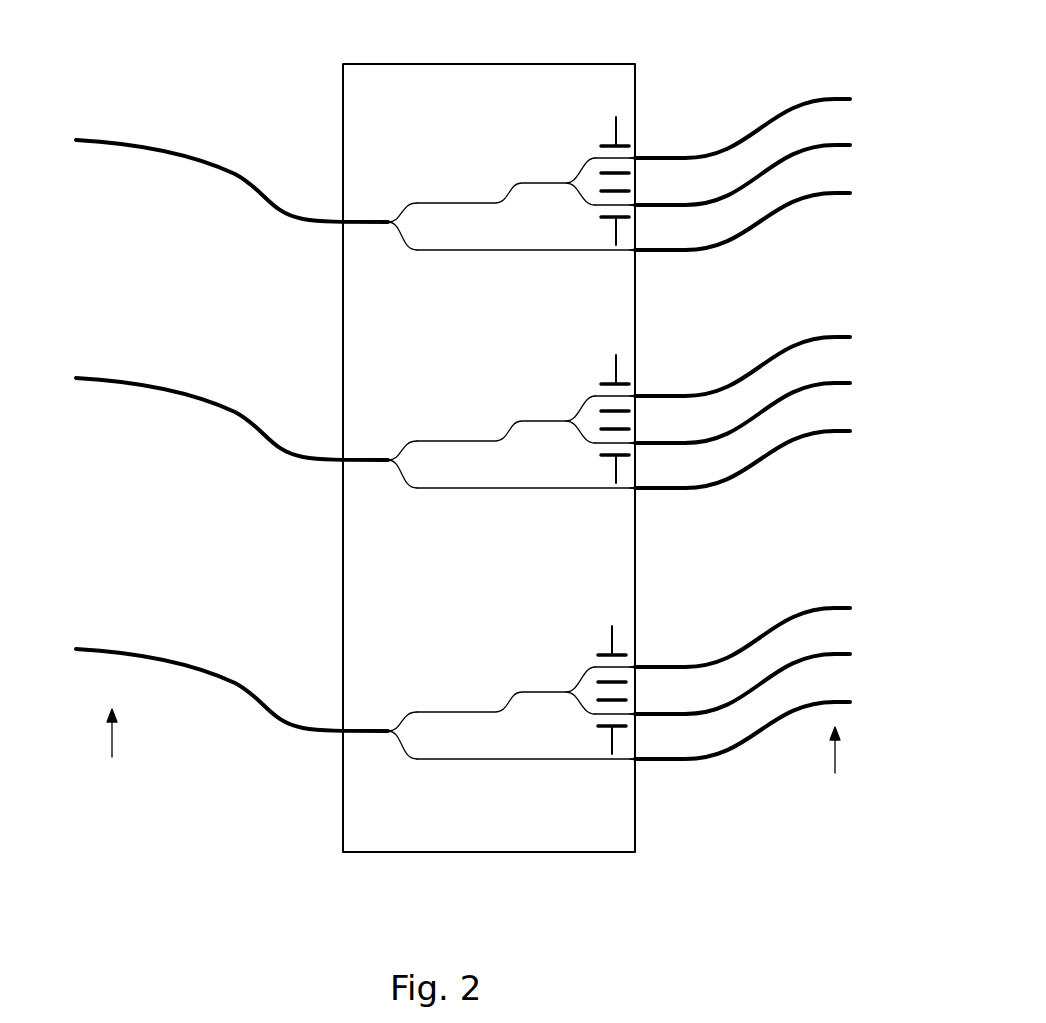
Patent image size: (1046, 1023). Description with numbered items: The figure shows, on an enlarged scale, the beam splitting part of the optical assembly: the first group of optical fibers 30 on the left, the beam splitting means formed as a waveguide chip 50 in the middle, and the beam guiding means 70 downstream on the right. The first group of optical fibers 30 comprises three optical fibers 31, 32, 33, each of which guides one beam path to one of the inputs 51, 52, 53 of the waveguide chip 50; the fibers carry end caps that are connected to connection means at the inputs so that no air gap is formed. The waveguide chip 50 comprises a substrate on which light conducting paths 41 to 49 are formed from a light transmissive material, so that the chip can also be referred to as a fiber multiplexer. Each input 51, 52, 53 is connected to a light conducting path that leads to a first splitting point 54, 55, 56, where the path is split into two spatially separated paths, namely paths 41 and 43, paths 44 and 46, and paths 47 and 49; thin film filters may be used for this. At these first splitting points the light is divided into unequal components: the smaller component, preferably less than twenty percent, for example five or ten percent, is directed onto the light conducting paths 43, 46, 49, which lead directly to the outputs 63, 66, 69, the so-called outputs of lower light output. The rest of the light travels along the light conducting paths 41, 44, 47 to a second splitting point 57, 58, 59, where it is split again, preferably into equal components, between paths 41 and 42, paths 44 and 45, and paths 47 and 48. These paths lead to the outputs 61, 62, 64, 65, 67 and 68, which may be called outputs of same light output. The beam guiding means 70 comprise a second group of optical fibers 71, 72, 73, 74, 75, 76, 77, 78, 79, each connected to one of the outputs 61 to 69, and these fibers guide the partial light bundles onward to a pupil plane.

The first group of optical fibers 30 is at (105, 746).
The optical fiber 31 is at (146, 152).
The optical fiber 32 is at (232, 419).
The optical fiber 33 is at (232, 690).
The light conducting path 41 is at (470, 202).
The light conducting path 42 is at (578, 197).
The light conducting path 43 is at (487, 252).
The light conducting path 44 is at (526, 395).
The light conducting path 45 is at (584, 451).
The light conducting path 46 is at (526, 511).
The light conducting path 47 is at (526, 665).
The light conducting path 48 is at (581, 722).
The light conducting path 49 is at (526, 782).
The waveguide chip 50 is at (637, 823).
The input 51 is at (337, 226).
The input 52 is at (321, 480).
The input 53 is at (321, 751).
The first splitting point 54 is at (386, 218).
The first splitting point 55 is at (381, 450).
The first splitting point 56 is at (381, 721).
The second splitting point 57 is at (565, 182).
The second splitting point 58 is at (559, 407).
The second splitting point 59 is at (559, 678).
The output 61 is at (638, 150).
The output 62 is at (638, 198).
The output 63 is at (638, 241).
The output 64 is at (651, 375).
The output 65 is at (651, 422).
The output 66 is at (651, 468).
The output 67 is at (651, 645).
The output 68 is at (651, 692).
The output 69 is at (651, 738).
The beam guiding means 70 is at (830, 764).
The optical fiber 71 is at (805, 102).
The optical fiber 72 is at (805, 148).
The optical fiber 73 is at (805, 196).
The optical fiber 74 is at (742, 347).
The optical fiber 75 is at (742, 393).
The optical fiber 76 is at (742, 440).
The optical fiber 77 is at (745, 616).
The optical fiber 78 is at (745, 663).
The optical fiber 79 is at (745, 710).